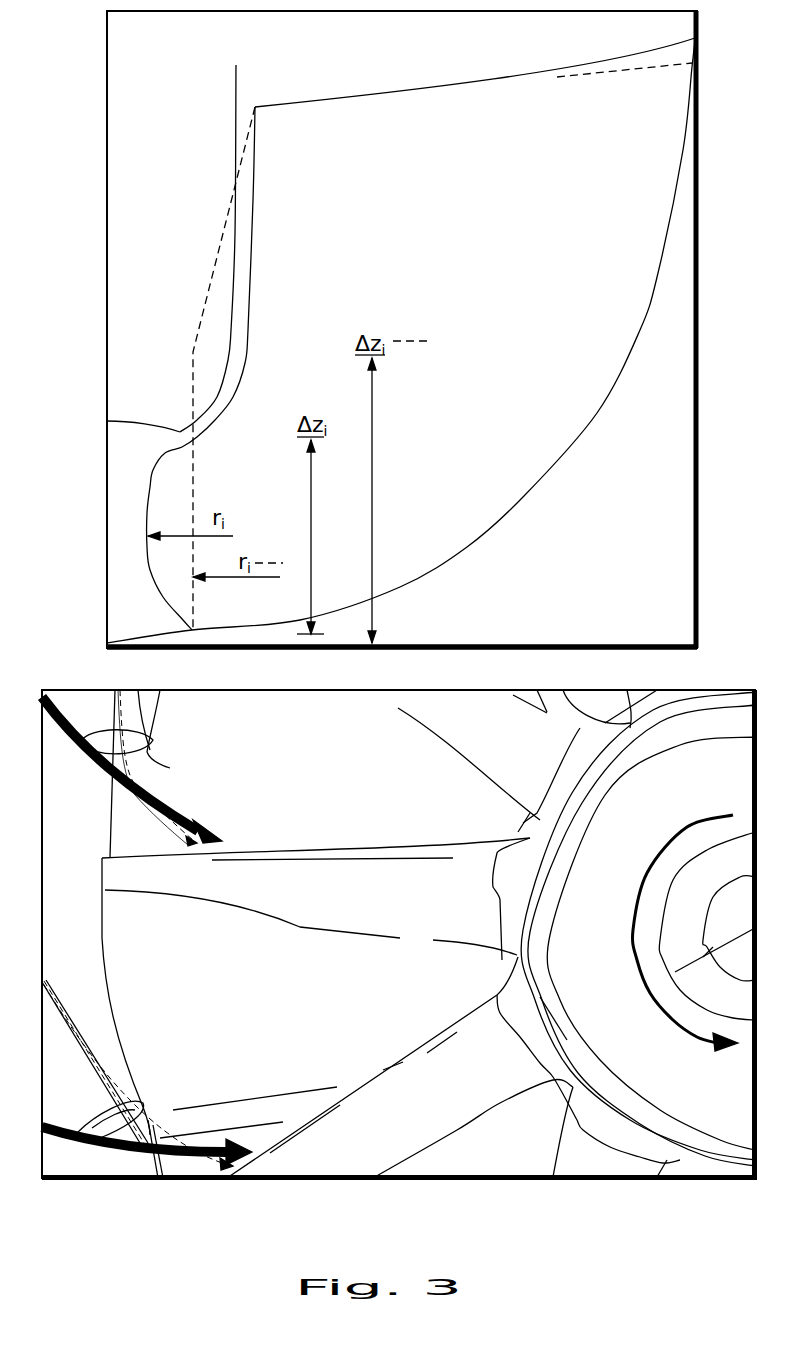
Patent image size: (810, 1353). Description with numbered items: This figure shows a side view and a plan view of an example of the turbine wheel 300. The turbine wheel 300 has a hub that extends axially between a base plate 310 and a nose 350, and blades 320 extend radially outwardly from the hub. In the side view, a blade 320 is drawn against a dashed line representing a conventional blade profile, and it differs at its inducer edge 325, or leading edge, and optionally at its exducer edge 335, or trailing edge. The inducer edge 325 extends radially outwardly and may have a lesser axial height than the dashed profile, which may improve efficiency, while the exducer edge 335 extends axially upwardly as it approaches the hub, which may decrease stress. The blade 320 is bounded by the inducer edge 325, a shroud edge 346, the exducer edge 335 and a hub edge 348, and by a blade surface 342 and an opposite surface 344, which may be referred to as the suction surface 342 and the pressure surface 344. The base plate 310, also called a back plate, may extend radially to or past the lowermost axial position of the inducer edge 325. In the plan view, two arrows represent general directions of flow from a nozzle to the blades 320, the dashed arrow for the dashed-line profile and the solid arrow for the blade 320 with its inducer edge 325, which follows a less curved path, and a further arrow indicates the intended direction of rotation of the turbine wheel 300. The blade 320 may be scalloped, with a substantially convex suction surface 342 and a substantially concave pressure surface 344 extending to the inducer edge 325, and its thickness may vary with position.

The turbine wheel 300 is at (667, 451).
The base plate 310 is at (506, 645).
The blade 320 is at (394, 68).
The inducer edge 325 is at (152, 485).
The exducer edge 335 is at (377, 94).
The blade surface 342 is at (482, 261).
The opposite surface 344 is at (329, 800).
The shroud edge 346 is at (253, 282).
The hub edge 348 is at (660, 275).
The nose 350 is at (623, 914).